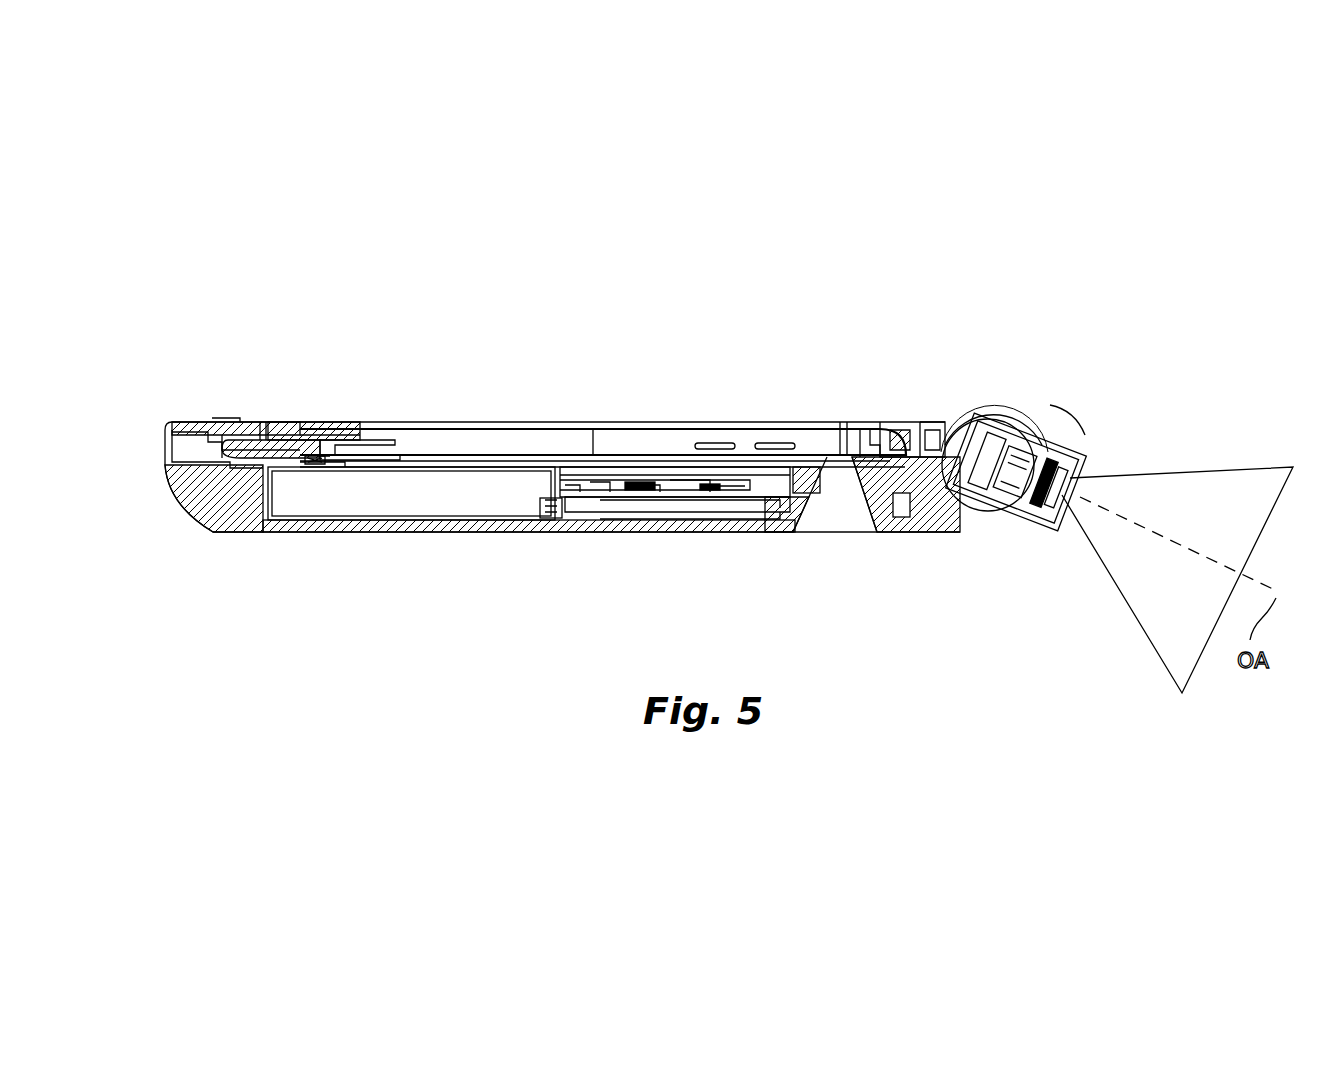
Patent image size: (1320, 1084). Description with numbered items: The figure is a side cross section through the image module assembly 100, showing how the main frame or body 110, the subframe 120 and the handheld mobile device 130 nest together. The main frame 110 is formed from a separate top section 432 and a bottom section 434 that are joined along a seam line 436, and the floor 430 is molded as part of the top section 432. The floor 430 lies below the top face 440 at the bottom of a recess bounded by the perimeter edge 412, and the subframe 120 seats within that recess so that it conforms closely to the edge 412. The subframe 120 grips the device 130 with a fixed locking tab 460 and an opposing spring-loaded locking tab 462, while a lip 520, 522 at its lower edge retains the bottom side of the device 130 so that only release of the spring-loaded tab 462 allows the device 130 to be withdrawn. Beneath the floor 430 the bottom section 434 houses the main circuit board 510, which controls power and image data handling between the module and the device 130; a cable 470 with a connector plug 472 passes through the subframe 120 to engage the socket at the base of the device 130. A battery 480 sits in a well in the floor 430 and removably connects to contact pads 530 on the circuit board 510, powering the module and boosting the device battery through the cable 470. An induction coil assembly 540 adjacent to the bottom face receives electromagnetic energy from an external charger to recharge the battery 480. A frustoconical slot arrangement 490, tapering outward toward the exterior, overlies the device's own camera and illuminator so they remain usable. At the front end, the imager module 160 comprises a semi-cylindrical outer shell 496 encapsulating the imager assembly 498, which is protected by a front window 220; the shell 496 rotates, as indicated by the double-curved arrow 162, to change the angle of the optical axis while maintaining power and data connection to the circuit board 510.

The image module assembly 100 is at (872, 334).
The main frame or body 110 is at (242, 522).
The subframe 120 is at (290, 420).
The handheld mobile device 130 is at (470, 440).
The imager module 160 is at (1030, 397).
The double-curved arrow 162 is at (955, 392).
The front window 220 is at (1090, 470).
The perimeter edge 412 is at (925, 458).
The floor 430 is at (900, 458).
The top section 432 is at (185, 424).
The bottom section 434 is at (208, 494).
The seam line 436 is at (172, 462).
The top face 440 is at (243, 418).
The locking tab 460 is at (322, 438).
The spring-loaded locking tab 462 is at (862, 458).
The cable 470 is at (270, 446).
The connector plug 472 is at (326, 455).
The battery 480 is at (445, 487).
The frustoconical slot arrangement 490 is at (840, 470).
The semi-cylindrical outer shell 496 is at (1040, 405).
The imager assembly 498 is at (1098, 436).
The main circuit board 510 is at (760, 498).
The lip 520 is at (893, 497).
The lip 522 is at (315, 462).
The contact pads 530 is at (556, 521).
The induction coil assembly 540 is at (706, 528).